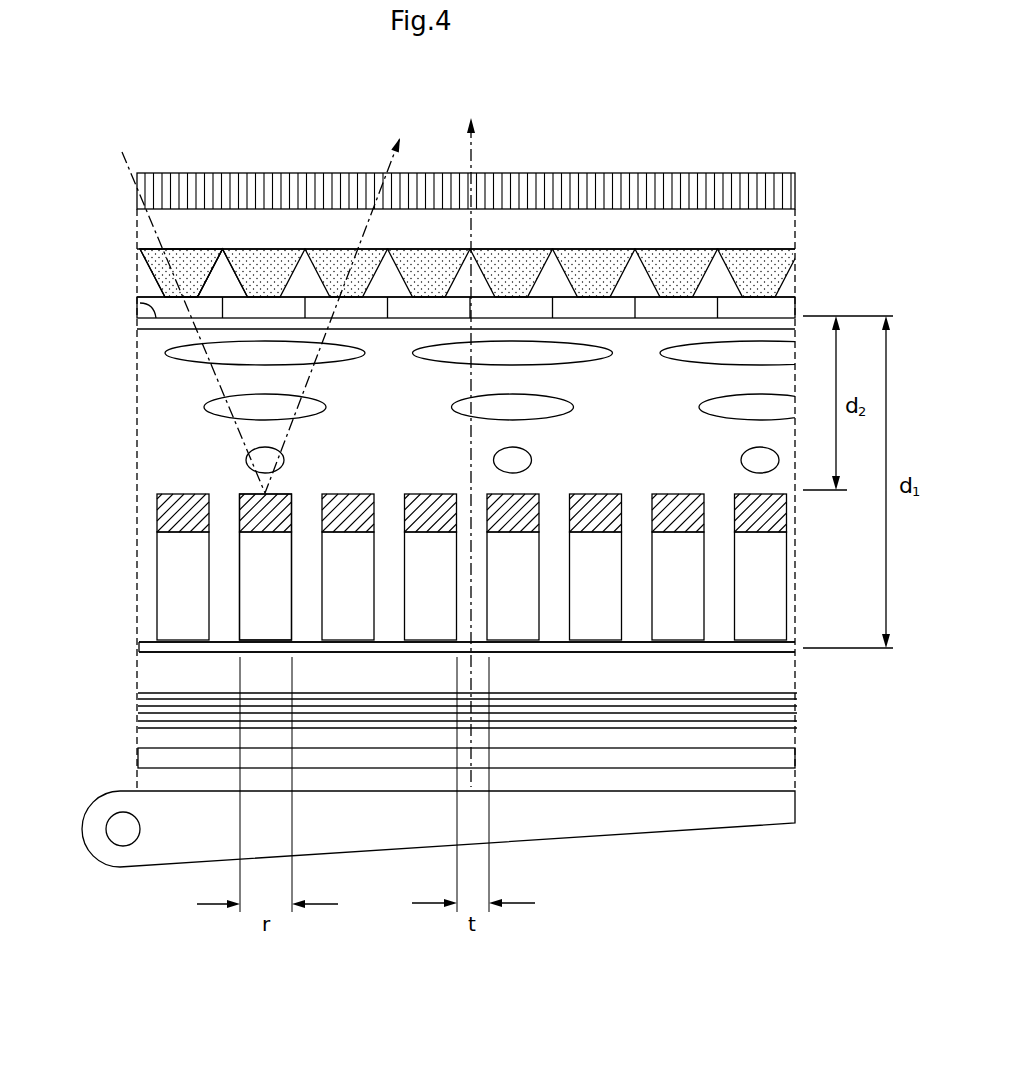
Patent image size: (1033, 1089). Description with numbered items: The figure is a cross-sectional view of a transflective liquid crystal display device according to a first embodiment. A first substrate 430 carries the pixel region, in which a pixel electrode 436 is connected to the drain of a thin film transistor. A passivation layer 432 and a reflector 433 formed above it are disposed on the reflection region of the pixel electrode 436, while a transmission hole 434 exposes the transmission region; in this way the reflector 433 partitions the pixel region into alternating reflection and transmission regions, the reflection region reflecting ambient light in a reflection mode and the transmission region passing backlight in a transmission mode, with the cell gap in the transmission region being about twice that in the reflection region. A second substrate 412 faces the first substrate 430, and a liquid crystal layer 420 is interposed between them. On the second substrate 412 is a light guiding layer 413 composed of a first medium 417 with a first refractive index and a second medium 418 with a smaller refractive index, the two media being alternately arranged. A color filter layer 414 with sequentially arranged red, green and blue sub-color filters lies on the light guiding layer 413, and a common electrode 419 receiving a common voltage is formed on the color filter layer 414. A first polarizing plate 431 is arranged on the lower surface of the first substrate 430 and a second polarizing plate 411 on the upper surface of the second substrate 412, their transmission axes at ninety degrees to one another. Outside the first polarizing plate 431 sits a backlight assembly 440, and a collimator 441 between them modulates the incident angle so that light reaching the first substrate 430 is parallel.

The second polarizing plate 411 is at (783, 188).
The second substrate 412 is at (783, 228).
The light guiding layer 413 is at (768, 262).
The color filter layer 414 is at (795, 304).
The first medium 417 is at (180, 258).
The second medium 418 is at (227, 277).
The common electrode 419 is at (137, 305).
The liquid crystal layer 420 is at (131, 329).
The first substrate 430 is at (790, 672).
The first polarizing plate 431 is at (777, 707).
The passivation layer 432 is at (172, 593).
The reflector 433 is at (177, 522).
The transmission hole 434 is at (227, 503).
The pixel electrode 436 is at (146, 648).
The backlight assembly 440 is at (73, 792).
The collimator 441 is at (787, 756).